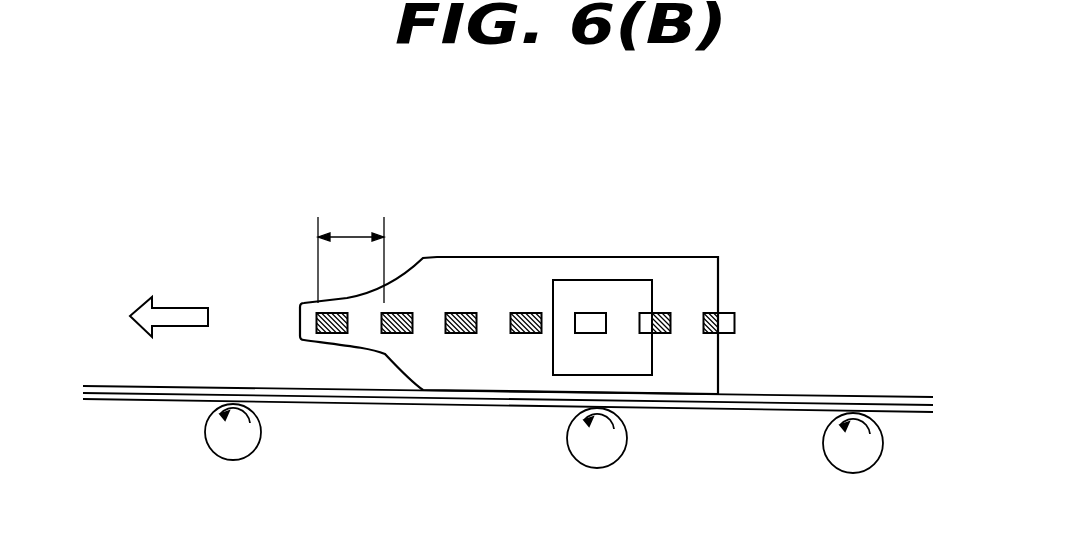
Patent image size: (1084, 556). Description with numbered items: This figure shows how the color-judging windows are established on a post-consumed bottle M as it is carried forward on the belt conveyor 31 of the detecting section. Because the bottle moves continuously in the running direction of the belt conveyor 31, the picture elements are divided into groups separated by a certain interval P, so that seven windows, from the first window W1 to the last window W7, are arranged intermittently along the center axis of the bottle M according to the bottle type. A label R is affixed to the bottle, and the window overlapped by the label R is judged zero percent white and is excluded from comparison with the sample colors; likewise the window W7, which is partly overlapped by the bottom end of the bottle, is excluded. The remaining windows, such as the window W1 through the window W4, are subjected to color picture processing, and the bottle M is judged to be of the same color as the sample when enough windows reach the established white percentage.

The belt conveyor 31 is at (135, 388).
The post-consumed bottle M is at (472, 277).
The label R is at (592, 290).
The interval P is at (351, 243).
The window W1 is at (333, 333).
The window W4 is at (530, 333).
The window W7 is at (727, 315).